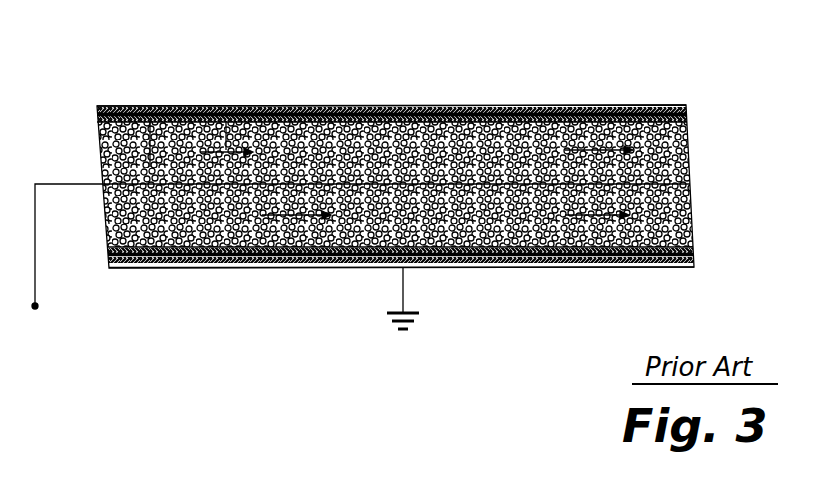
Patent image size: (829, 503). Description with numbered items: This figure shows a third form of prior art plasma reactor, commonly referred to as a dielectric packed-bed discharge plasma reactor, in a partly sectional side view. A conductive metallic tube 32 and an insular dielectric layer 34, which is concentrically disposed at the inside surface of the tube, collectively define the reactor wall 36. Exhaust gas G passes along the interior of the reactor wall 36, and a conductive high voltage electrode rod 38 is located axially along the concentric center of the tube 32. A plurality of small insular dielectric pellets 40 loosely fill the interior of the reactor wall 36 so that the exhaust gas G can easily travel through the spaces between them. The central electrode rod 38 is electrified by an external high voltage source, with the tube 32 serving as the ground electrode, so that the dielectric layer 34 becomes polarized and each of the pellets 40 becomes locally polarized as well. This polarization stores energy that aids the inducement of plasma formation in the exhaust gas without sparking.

The conductive metallic tube 32 is at (521, 106).
The insular dielectric layer 34 is at (418, 112).
The reactor wall 36 is at (323, 98).
The conductive high voltage electrode rod 38 is at (153, 110).
The exhaust gas G is at (231, 112).
The insular dielectric pellets 40 is at (618, 110).